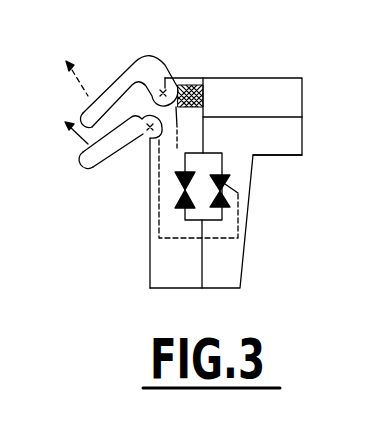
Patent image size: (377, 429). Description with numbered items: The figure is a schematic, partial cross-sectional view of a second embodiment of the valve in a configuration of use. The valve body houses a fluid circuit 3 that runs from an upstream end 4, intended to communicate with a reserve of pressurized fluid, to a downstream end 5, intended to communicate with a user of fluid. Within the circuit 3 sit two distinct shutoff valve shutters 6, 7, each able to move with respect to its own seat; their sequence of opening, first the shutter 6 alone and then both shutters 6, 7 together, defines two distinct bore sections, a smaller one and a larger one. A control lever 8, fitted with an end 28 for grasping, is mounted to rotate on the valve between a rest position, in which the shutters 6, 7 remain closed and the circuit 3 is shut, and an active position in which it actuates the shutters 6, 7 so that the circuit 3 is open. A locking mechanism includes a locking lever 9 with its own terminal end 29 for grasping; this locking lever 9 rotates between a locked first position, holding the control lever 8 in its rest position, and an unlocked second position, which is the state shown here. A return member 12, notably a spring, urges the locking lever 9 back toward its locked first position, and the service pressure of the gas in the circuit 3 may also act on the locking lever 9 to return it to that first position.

The fluid circuit 3 is at (272, 118).
The upstream end 4 is at (201, 288).
The downstream end 5 is at (303, 116).
The shutoff valve shutter 6 is at (183, 207).
The shutoff valve shutter 7 is at (223, 208).
The control lever 8 is at (110, 95).
The locking lever 9 is at (102, 152).
The return member 12 is at (188, 79).
The end for grasping 28 is at (78, 111).
The end for grasping 29 is at (84, 170).